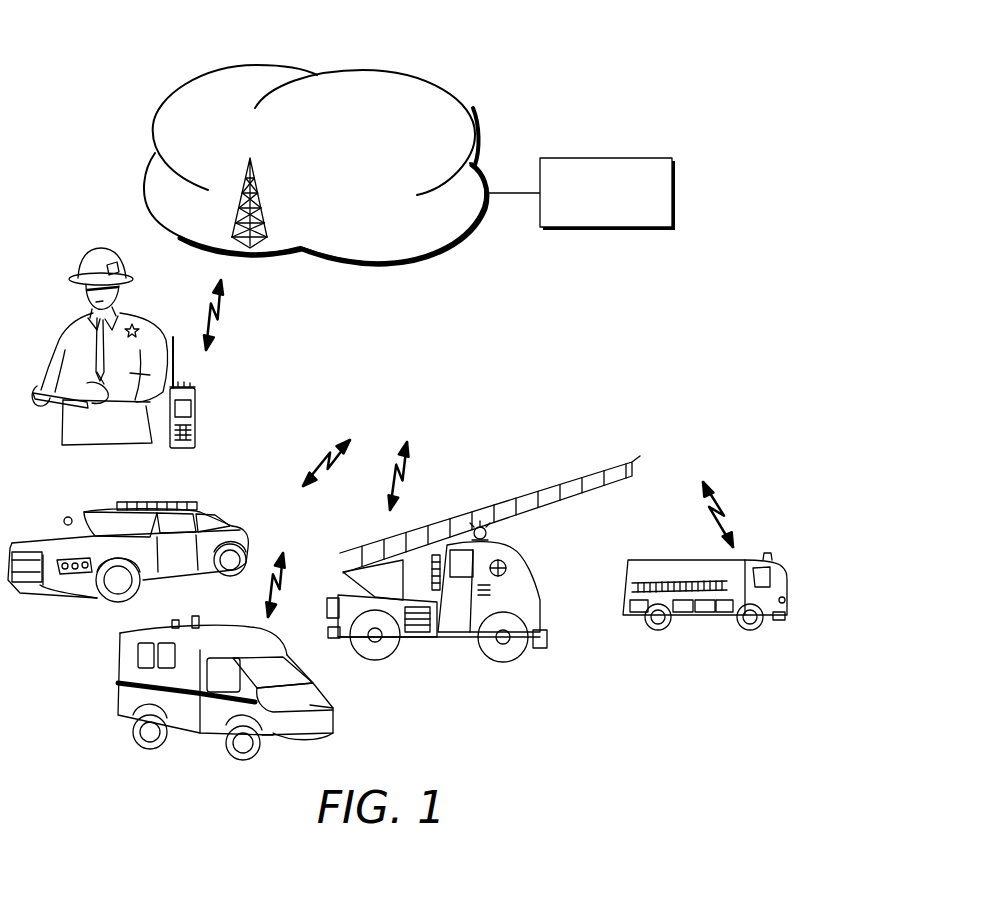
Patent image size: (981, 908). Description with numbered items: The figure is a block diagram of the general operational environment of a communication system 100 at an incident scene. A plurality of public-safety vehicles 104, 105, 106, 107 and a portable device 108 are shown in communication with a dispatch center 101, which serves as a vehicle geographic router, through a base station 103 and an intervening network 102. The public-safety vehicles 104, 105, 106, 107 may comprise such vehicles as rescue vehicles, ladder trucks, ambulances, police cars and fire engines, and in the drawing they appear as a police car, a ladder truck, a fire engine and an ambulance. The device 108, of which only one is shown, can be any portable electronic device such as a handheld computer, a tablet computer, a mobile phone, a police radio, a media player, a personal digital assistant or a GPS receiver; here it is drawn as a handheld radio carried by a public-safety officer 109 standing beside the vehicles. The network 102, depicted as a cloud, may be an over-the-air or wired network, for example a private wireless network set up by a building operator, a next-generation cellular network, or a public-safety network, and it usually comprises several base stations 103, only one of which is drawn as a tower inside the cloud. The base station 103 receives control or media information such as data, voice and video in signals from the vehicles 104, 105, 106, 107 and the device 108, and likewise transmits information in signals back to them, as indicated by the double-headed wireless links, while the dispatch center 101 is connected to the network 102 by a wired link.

The communication system 100 is at (72, 31).
The dispatch center 101 is at (638, 158).
The network 102 is at (478, 117).
The base station 103 is at (256, 173).
The public-safety vehicle 104 is at (246, 528).
The public-safety vehicle 105 is at (632, 470).
The public-safety vehicle 106 is at (785, 563).
The public-safety vehicle 107 is at (333, 707).
The device 108 is at (199, 409).
The public safety officer 109 is at (115, 278).